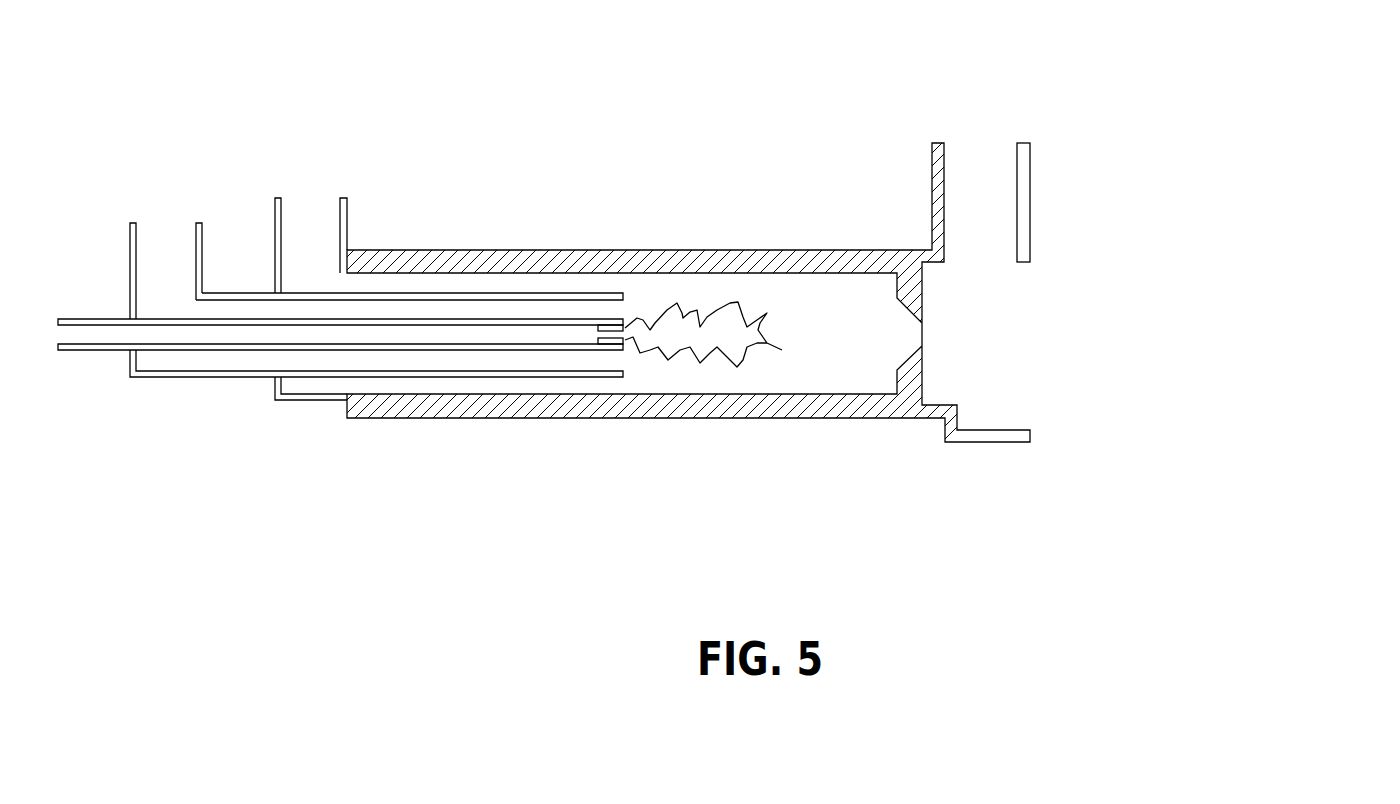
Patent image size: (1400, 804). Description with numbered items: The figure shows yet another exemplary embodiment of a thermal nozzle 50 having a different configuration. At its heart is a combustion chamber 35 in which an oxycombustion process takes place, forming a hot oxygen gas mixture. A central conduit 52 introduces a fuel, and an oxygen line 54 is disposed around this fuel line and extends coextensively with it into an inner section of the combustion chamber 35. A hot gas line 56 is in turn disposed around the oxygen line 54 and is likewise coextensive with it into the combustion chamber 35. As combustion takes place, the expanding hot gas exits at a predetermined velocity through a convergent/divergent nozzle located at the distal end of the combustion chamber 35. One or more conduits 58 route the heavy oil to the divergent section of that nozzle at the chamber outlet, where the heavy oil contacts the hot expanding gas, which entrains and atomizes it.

The thermal nozzle 50 is at (791, 47).
The central conduit 52 is at (86, 350).
The oxygen line 54 is at (193, 377).
The hot gas line 56 is at (318, 402).
The conduit 58 is at (1030, 165).
The combustion chamber 35 is at (845, 418).